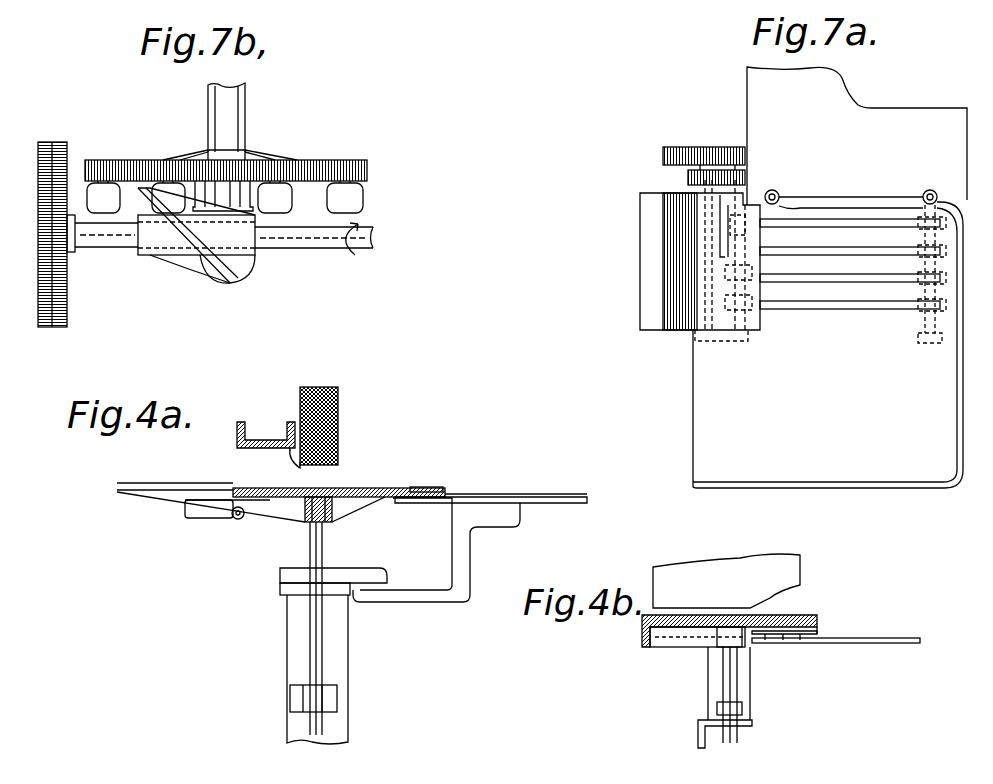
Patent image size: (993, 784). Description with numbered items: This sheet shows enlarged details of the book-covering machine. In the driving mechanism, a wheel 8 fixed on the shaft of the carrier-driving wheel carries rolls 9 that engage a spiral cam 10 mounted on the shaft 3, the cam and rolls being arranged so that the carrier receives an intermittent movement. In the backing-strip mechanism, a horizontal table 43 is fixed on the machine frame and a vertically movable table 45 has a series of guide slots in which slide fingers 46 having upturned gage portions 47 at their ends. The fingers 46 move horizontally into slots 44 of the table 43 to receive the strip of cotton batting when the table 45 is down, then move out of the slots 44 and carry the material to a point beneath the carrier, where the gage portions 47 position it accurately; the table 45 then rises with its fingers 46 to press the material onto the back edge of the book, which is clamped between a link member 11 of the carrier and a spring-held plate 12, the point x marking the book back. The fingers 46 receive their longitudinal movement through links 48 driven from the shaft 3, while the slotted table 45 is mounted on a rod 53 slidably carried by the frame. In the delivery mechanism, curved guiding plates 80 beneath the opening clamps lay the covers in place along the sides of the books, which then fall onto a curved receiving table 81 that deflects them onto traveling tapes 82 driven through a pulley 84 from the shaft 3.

In FIG. 7B, the shaft 3 is at (326, 238).
In FIG. 7B, the wheel 8 is at (367, 174).
In FIG. 7B, the rolls 9 is at (363, 200).
In FIG. 7B, the spiral cam 10 is at (167, 252).
In FIG. 7A, the curved guiding plates 80 is at (745, 215).
In FIG. 7A, the curved receiving table 81 is at (718, 335).
In FIG. 7A, the traveling tapes 82 is at (831, 305).
In FIG. 7A, the pulley 84 is at (695, 153).
In FIG. 4A, the reference point x is at (316, 392).
In FIG. 4B, the reference point x is at (792, 600).
In FIG. 4A, the link members 11 is at (300, 413).
In FIG. 4B, the link members 11 is at (748, 560).
In FIG. 4A, the plate 12 is at (338, 430).
In FIG. 4A, the horizontal table 43 is at (545, 495).
In FIG. 4B, the horizontal table 43 is at (848, 641).
In FIG. 4B, the slots 44 is at (800, 636).
In FIG. 4B, the vertically movable table 45 is at (644, 622).
In FIG. 4A, the fingers 46 is at (360, 492).
In FIG. 4B, the fingers 46 is at (700, 615).
In FIG. 4A, the gage portions 47 is at (447, 489).
In FIG. 4B, the gage portions 47 is at (772, 618).
In FIG. 4A, the links 48 is at (205, 512).
In FIG. 4B, the rod 53 is at (733, 690).